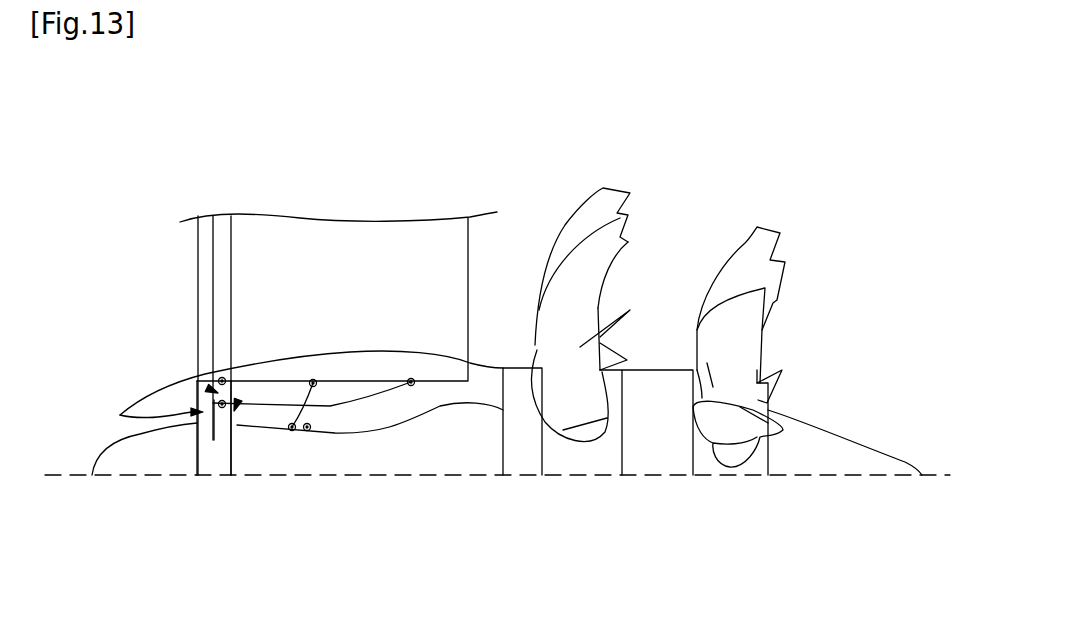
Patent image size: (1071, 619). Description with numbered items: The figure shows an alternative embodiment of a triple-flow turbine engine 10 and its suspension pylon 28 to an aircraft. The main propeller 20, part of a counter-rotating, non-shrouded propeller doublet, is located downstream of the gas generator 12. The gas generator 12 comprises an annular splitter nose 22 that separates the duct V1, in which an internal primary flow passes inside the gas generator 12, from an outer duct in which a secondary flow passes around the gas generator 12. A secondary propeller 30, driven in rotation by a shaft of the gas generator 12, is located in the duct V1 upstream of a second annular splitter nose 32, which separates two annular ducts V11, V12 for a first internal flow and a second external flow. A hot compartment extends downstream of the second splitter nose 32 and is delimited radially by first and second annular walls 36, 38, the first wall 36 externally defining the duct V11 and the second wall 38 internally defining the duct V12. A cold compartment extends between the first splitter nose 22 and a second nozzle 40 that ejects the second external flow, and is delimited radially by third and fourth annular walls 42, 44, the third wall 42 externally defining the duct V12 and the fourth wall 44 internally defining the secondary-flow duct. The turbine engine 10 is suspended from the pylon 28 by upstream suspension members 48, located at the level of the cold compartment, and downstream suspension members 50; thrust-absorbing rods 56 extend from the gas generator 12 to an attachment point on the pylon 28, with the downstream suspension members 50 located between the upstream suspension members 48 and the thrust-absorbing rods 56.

The turbine engine 10 is at (786, 181).
The gas generator 12 is at (722, 502).
The main propeller 20 is at (717, 282).
The annular splitter nose 22 is at (127, 414).
The pylon 28 is at (447, 260).
The secondary propeller 30 is at (140, 397).
The second annular splitter nose 32 is at (226, 430).
The first annular wall 36 is at (291, 431).
The second annular wall 38 is at (330, 422).
The second nozzle 40 is at (247, 413).
The third annular wall 42 is at (300, 381).
The fourth annular wall 44 is at (296, 381).
The upstream suspension members 48 is at (207, 389).
The downstream suspension members 50 is at (311, 430).
The thrust-absorbing rods 56 is at (360, 402).
The annular duct V1 is at (142, 430).
The annular duct V11 is at (235, 425).
The annular duct V12 is at (278, 381).